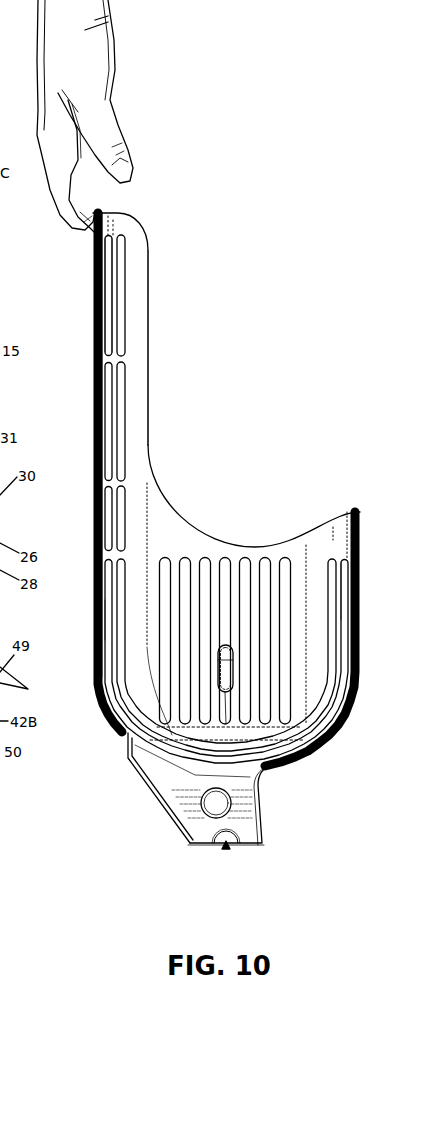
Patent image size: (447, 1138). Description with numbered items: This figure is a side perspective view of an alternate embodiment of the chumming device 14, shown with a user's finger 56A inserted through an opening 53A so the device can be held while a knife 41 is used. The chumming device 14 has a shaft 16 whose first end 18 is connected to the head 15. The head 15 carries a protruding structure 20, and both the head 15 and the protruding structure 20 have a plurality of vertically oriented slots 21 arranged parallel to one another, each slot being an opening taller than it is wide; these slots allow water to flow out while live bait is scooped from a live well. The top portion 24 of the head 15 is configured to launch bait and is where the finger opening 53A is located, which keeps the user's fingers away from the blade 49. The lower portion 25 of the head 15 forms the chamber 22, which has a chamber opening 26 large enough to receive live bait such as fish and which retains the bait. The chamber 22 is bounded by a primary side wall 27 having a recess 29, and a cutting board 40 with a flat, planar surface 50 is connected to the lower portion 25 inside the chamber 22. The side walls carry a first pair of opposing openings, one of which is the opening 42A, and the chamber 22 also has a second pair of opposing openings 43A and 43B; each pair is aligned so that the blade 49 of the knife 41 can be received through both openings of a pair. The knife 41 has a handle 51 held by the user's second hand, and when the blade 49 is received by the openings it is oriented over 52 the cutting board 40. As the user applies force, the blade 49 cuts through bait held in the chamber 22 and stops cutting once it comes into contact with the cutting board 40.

The chumming device 14 is at (185, 365).
The head 15 is at (150, 400).
The shaft 16 is at (190, 843).
The first end 18 is at (193, 792).
The protruding structure 20 is at (148, 245).
The vertically oriented slots 21 is at (120, 295).
The chamber 22 is at (147, 649).
The top portion 24 is at (148, 305).
The lower portion 25 is at (248, 768).
The chamber opening 26 is at (230, 530).
The primary side wall 27 is at (160, 585).
The recess 29 is at (258, 545).
The cutting board 40 is at (137, 745).
The knife 41 is at (233, 658).
The first opposing opening 42A is at (225, 628).
The second opposing opening 43A is at (92, 633).
The second opposing opening 43B is at (347, 627).
The blade 49 is at (223, 700).
The flat planar surface 50 is at (125, 738).
The handle 51 is at (228, 672).
The over 52 is at (223, 720).
The opening 53A is at (94, 255).
The finger 56A is at (75, 220).